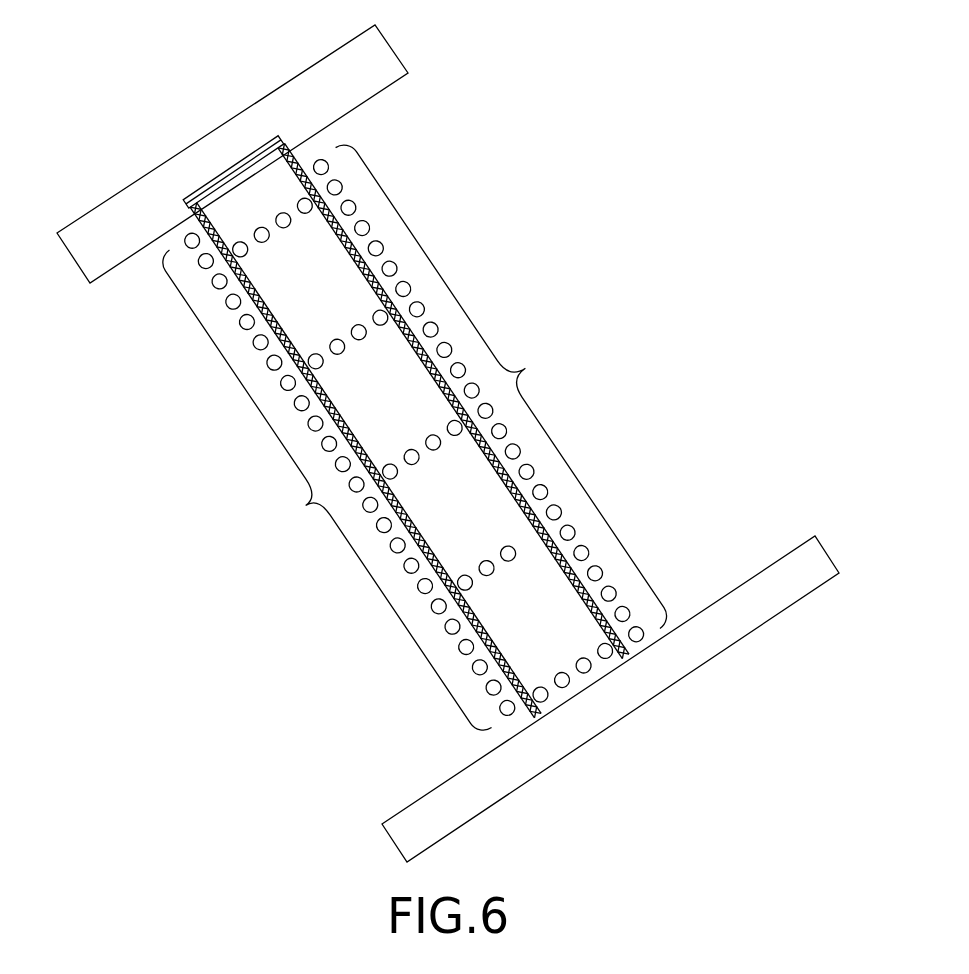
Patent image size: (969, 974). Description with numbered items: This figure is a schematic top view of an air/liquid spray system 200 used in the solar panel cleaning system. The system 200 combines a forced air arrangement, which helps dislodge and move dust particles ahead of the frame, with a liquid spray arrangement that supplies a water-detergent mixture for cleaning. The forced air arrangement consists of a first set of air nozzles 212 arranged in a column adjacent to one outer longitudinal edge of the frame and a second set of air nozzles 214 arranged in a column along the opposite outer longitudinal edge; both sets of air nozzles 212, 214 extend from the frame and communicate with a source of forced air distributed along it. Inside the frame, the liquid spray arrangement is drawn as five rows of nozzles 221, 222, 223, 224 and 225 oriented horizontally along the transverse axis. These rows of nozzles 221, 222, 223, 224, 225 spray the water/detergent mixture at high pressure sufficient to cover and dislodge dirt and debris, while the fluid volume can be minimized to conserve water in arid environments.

The air/liquid spray system 200 is at (522, 107).
The first set of air nozzles 212 is at (330, 487).
The second set of air nozzles 214 is at (499, 387).
The row of nozzles 221 is at (542, 685).
The row of nozzles 222 is at (466, 574).
The row of nozzles 223 is at (391, 463).
The row of nozzles 224 is at (337, 338).
The row of nozzles 225 is at (262, 245).